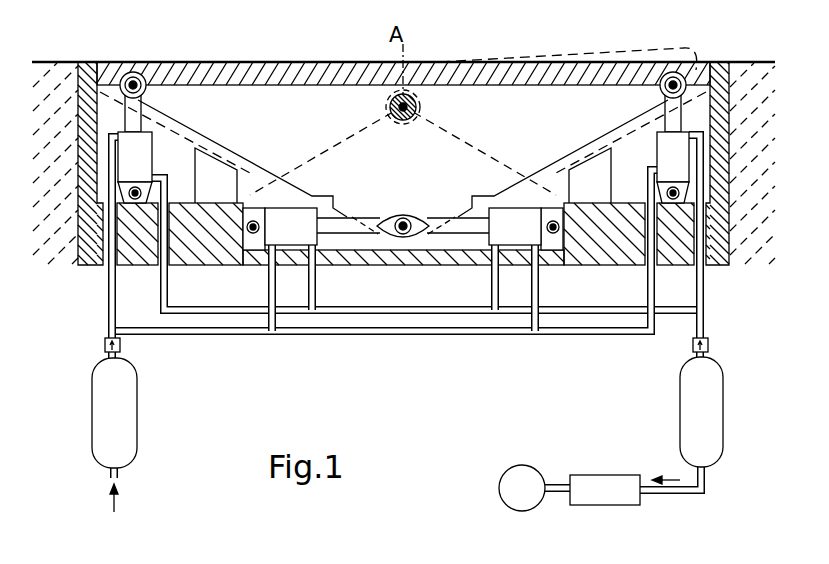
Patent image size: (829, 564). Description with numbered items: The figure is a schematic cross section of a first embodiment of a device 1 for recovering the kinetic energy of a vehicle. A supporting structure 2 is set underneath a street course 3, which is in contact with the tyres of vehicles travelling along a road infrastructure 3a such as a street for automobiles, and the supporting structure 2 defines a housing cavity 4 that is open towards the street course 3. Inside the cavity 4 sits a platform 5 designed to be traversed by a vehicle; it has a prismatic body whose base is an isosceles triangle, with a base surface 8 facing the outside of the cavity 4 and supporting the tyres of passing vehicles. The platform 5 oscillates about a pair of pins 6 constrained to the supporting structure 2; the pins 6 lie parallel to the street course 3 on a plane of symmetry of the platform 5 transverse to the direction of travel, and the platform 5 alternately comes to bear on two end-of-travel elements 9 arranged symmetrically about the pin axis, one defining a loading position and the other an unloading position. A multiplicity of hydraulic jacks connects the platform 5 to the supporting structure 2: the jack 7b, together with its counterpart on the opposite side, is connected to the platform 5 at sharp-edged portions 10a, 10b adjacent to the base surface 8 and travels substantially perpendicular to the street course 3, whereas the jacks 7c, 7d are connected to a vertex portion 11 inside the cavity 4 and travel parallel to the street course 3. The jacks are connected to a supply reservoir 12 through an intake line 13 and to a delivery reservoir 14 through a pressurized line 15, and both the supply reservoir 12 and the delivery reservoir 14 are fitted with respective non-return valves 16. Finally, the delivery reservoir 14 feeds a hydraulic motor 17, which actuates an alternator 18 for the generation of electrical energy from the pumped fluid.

The device for recovering kinetic energy 1 is at (440, 350).
The supporting structure 2 is at (90, 245).
The street course 3 is at (749, 60).
The road infrastructure 3a is at (63, 60).
The housing cavity 4 is at (99, 119).
The platform 5 is at (354, 100).
The pins 6 is at (417, 95).
The hydraulic jack 7b is at (140, 166).
The hydraulic jack 7c is at (491, 243).
The hydraulic jack 7d is at (318, 243).
The base surface 8 is at (237, 62).
The end-of-travel elements 9 is at (223, 193).
The sharp-edged portion 10a is at (690, 68).
The sharp-edged portion 10b is at (150, 80).
The vertex portion 11 is at (412, 242).
The supply reservoir 12 is at (120, 435).
The intake line 13 is at (347, 333).
The delivery reservoir 14 is at (695, 408).
The pressurized line 15 is at (392, 313).
The non-return valves 16 is at (121, 343).
The hydraulic motor 17 is at (612, 482).
The alternator 18 is at (523, 484).